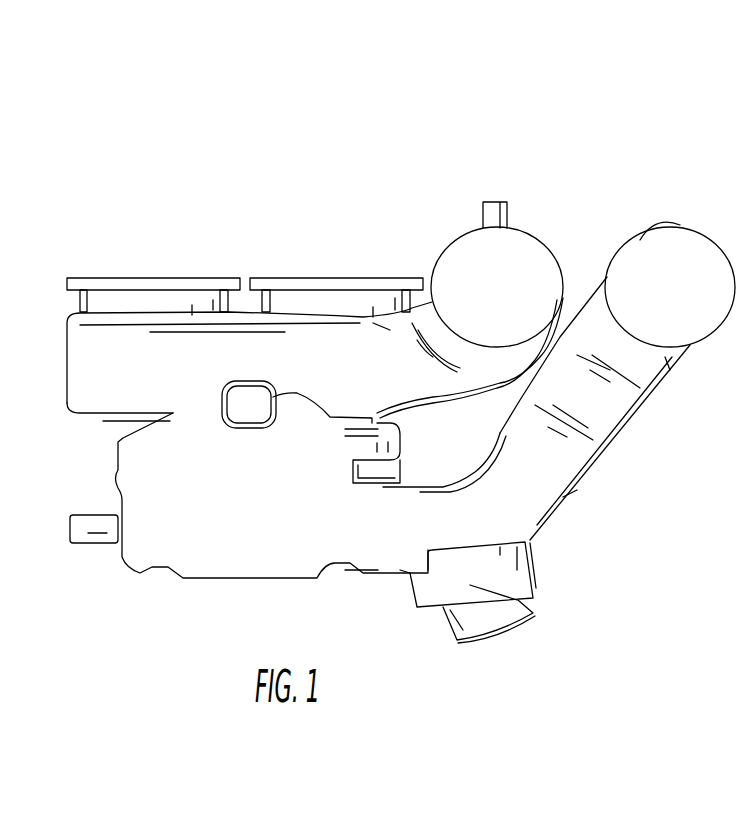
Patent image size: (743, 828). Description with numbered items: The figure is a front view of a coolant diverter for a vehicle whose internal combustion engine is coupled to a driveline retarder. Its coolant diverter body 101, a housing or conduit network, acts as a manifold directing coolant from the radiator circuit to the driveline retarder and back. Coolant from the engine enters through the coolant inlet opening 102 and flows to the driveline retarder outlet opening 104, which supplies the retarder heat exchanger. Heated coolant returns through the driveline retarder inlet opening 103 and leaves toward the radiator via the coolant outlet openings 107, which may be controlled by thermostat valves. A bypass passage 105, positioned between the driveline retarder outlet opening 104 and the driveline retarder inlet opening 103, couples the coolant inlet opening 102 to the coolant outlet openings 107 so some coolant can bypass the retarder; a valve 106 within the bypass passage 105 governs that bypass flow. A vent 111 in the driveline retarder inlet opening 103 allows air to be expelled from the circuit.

The coolant diverter body 101 is at (100, 193).
The coolant inlet opening 102 is at (223, 500).
The driveline retarder inlet opening 103 is at (473, 247).
The driveline retarder outlet opening 104 is at (685, 267).
The bypass passage 105 is at (447, 450).
The valve 106 is at (510, 598).
The coolant outlet openings 107 is at (165, 295).
The vent 111 is at (493, 212).